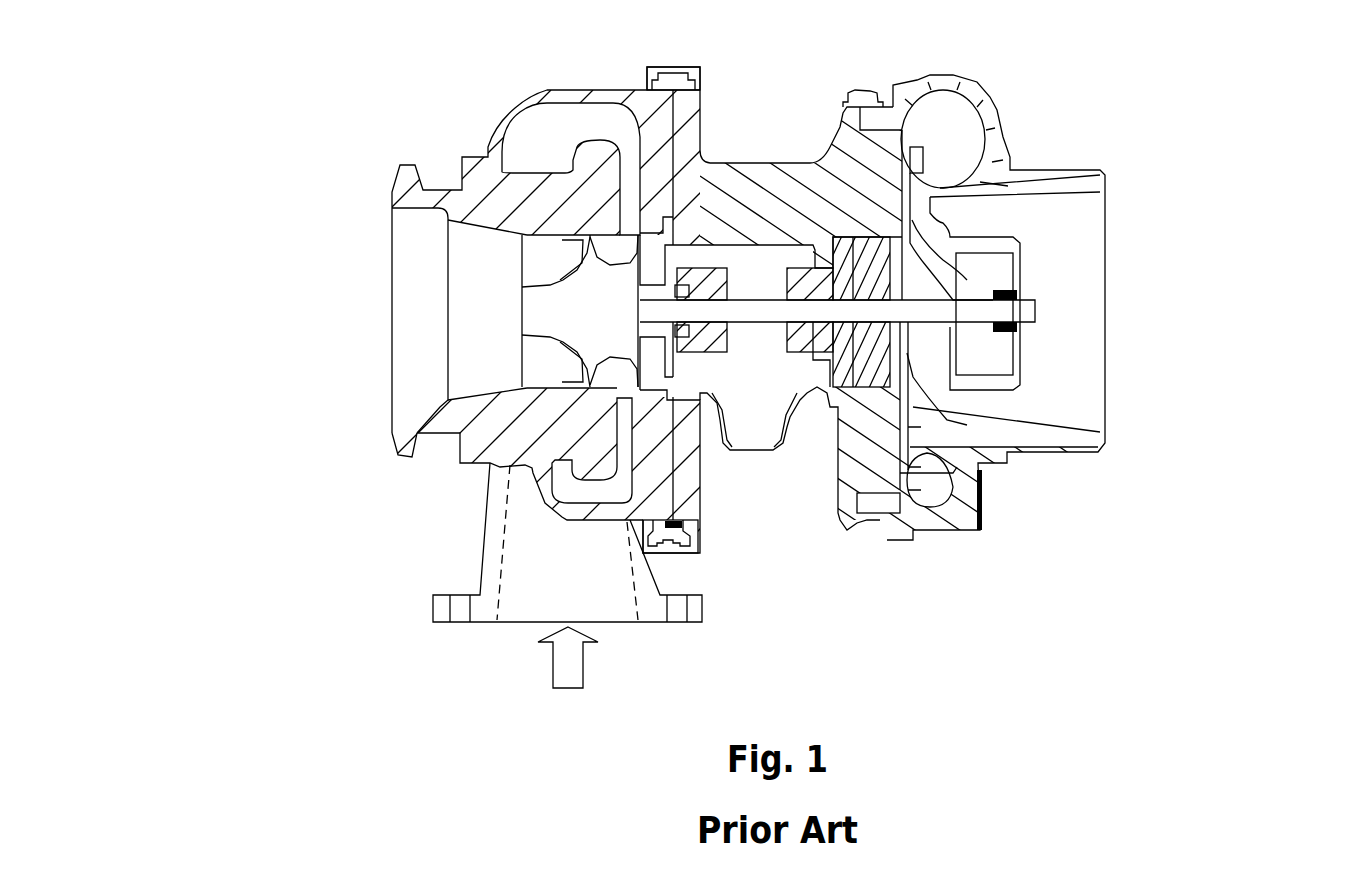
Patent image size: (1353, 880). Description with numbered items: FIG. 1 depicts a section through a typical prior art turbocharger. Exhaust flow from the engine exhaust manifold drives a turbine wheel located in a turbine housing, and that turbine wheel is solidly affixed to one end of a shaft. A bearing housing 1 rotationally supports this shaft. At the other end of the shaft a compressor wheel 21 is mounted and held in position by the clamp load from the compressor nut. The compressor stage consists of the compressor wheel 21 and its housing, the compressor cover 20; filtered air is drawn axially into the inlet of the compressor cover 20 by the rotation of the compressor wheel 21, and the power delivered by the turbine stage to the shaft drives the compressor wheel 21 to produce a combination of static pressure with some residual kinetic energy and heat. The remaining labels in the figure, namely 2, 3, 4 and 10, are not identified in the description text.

The bearing housing 1 is at (602, 313).
The turbine housing 2 is at (490, 538).
The exhaust gas inlet flow 3 is at (568, 667).
The turbine housing inlet 4 is at (527, 235).
The bearing housing 10 is at (690, 440).
The compressor cover 20 is at (958, 452).
The compressor wheel 21 is at (930, 355).